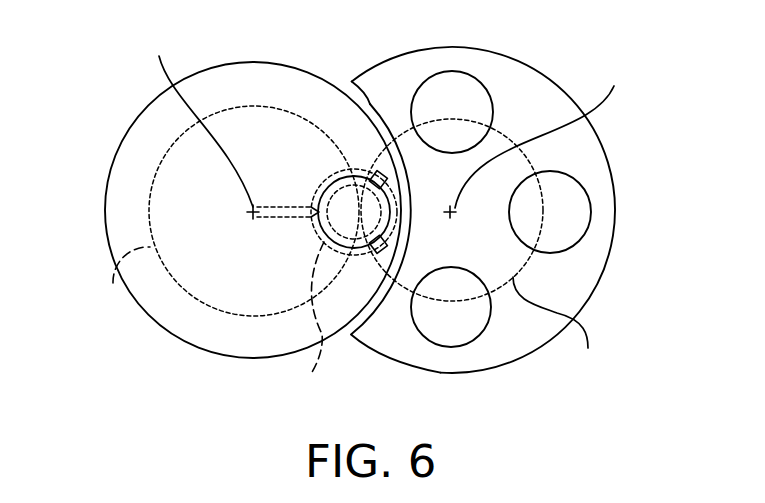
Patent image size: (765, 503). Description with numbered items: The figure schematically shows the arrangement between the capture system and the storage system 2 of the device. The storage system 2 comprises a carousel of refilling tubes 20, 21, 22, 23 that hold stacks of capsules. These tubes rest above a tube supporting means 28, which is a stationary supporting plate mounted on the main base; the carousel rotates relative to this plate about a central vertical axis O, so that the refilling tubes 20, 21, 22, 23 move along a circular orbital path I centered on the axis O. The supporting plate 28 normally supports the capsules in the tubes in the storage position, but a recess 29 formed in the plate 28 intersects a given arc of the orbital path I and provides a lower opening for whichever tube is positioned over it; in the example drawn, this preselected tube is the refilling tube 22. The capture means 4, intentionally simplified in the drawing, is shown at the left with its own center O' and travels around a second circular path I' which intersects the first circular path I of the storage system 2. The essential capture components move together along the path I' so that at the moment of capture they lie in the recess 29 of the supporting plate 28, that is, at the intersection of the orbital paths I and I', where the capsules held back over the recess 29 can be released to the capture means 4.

The storage system 2 is at (479, 209).
The capture means 4 is at (235, 221).
The refilling tube 20 is at (591, 213).
The refilling tube 21 is at (451, 347).
The refilling tube 22 is at (343, 286).
The refilling tube 23 is at (453, 71).
The tube supporting means 28 is at (520, 59).
The recess 29 is at (349, 92).
The circular path I is at (552, 327).
The second circular path I' is at (109, 275).
The central vertical axis O is at (543, 132).
The center of driven wheel O' is at (200, 118).